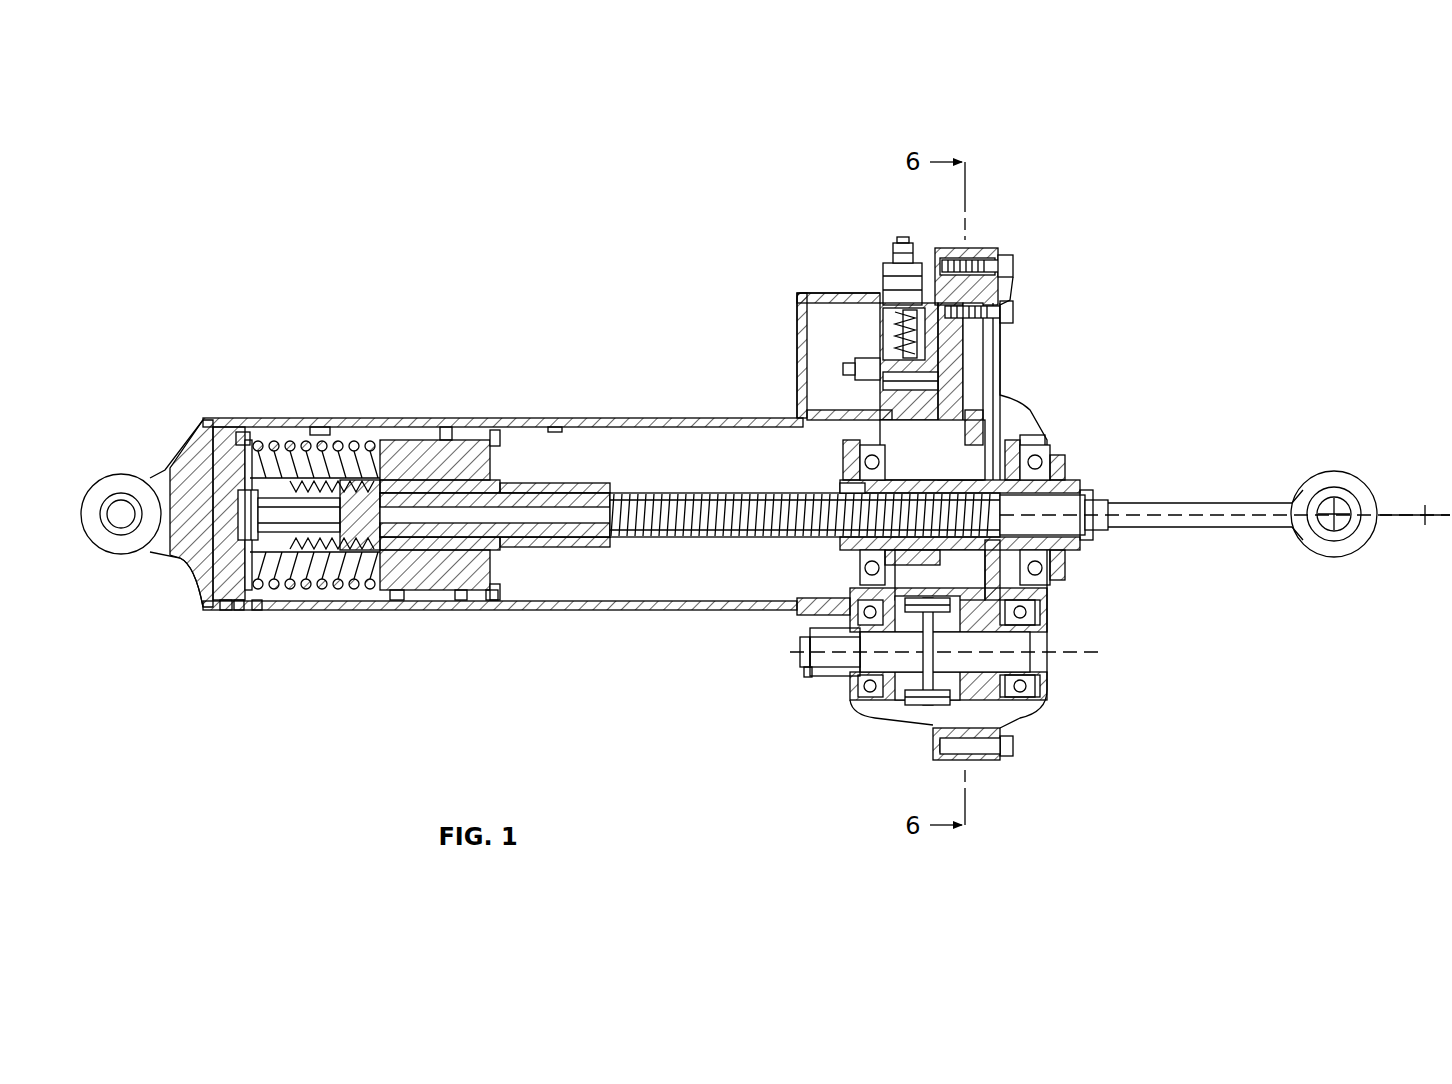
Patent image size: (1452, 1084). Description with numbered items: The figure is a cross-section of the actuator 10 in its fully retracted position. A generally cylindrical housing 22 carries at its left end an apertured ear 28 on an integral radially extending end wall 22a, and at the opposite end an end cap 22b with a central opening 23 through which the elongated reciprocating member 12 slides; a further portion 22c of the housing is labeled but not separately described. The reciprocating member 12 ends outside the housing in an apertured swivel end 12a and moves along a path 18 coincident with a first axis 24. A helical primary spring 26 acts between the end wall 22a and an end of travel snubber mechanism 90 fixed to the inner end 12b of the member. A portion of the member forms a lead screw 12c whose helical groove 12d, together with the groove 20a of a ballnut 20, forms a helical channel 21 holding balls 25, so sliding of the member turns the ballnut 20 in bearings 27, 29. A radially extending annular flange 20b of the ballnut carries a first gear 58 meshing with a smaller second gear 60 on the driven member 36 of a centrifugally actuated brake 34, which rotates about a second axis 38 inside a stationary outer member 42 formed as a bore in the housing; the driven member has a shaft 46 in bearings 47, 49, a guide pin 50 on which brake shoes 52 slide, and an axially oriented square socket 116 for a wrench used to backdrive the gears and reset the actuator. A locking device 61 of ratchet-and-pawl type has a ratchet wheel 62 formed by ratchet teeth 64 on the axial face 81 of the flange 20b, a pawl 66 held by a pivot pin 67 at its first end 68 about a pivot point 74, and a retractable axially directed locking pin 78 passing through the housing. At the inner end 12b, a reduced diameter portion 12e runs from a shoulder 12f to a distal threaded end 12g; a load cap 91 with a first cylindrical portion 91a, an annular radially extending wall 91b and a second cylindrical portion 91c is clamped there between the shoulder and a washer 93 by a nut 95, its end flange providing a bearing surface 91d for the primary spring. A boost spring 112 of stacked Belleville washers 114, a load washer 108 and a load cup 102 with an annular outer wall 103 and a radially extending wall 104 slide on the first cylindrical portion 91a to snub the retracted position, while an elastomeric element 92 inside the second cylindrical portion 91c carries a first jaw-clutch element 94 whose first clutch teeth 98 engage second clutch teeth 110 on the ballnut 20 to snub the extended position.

The actuator 10 is at (798, 290).
The reciprocating member 12 is at (1180, 503).
The apertured swivel end 12a is at (1372, 480).
The inner end 12b is at (548, 538).
The lead screw 12c is at (655, 545).
The helical groove 12d is at (805, 538).
The reduced diameter portion 12e is at (285, 605).
The shoulder 12f is at (315, 605).
The distal threaded end 12g is at (245, 505).
The path 18 is at (1425, 522).
The ballnut 20 is at (955, 488).
The helical groove 20a is at (860, 445).
The annular flange 20b is at (1040, 455).
The helical channel 21 is at (940, 552).
The housing 22 is at (768, 412).
The end wall 22a is at (170, 540).
The end cap 22b is at (1015, 405).
The housing 22c is at (848, 290).
The central opening 23 is at (1095, 483).
The first axis 24 is at (1392, 522).
The balls 25 is at (1045, 612).
The primary spring 26 is at (415, 430).
The bearing 27 is at (858, 555).
The apertured ear 28 is at (120, 474).
The bearing 29 is at (1060, 570).
The centrifugally actuated brake 34 is at (1010, 758).
The driven member 36 is at (798, 672).
The second axis 38 is at (797, 660).
The stationary outer member 42 is at (915, 725).
The shaft 46 is at (812, 678).
The bearing 47 is at (858, 705).
The bearing 49 is at (1010, 682).
The guide pin 50 is at (830, 615).
The brake shoes 52 is at (1035, 652).
The first gear 58 is at (1030, 440).
The second gear 60 is at (992, 702).
The locking device 61 is at (1020, 290).
The ratchet wheel 62 is at (965, 458).
The ratchet teeth 64 is at (990, 548).
The pawl 66 is at (978, 352).
The pivot pin 67 is at (1013, 312).
The first end 68 is at (975, 302).
The pivot point 74 is at (1015, 315).
The locking pin 78 is at (980, 372).
The axial face 81 is at (1050, 478).
The end of travel snubber mechanism 90 is at (555, 427).
The load cap 91 is at (503, 445).
The first cylindrical portion 91a is at (218, 555).
The annular radially extending wall 91b is at (398, 605).
The second cylindrical portion 91c is at (460, 605).
The bearing surface 91d is at (490, 605).
The elastomeric element 92 is at (446, 427).
The washer 93 is at (290, 441).
The first element of jaw tooth clutch 94 is at (503, 545).
The nut 95 is at (240, 438).
The first clutch teeth 98 is at (530, 538).
The load cup 102 is at (205, 607).
The annular outer wall 103 is at (240, 480).
The annular radially extending wall 104 is at (318, 427).
The load washer 108 is at (225, 605).
The second clutch teeth 110 is at (865, 488).
The boost spring 112 is at (240, 605).
The Belleville washers 114 is at (258, 605).
The square socket 116 is at (815, 642).